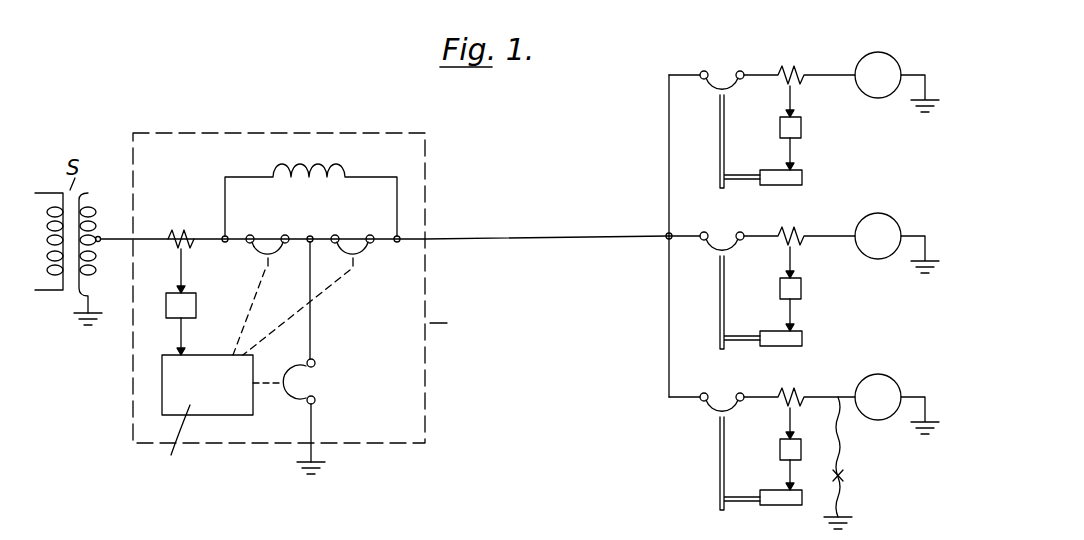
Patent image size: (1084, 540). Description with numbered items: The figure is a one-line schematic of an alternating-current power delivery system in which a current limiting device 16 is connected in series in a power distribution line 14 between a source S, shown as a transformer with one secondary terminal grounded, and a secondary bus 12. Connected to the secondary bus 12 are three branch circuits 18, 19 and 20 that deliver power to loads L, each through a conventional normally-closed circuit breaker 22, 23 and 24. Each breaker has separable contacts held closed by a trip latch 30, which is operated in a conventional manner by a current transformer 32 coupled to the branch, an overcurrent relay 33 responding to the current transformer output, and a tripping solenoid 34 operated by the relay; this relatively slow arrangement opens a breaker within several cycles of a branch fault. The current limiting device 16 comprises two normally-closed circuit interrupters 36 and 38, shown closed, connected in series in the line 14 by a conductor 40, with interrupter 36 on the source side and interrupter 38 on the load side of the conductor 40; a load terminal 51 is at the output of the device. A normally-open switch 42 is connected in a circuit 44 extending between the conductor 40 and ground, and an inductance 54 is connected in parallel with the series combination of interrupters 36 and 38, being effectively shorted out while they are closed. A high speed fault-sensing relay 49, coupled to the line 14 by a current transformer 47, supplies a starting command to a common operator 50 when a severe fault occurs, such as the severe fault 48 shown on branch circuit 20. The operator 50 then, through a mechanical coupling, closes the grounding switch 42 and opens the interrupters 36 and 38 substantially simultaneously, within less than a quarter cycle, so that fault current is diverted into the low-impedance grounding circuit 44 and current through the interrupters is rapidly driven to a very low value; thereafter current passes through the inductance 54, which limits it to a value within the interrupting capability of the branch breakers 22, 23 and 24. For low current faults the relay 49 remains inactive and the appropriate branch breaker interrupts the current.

The secondary bus 12 is at (669, 141).
The power distribution line 14 is at (541, 230).
The current limiting device 16 is at (254, 132).
The branch circuit 18 is at (687, 72).
The branch circuit 19 is at (689, 233).
The branch circuit 20 is at (689, 394).
The circuit breaker 22 is at (709, 93).
The circuit breaker 23 is at (712, 257).
The circuit breaker 24 is at (712, 419).
The trip latch 30 is at (733, 172).
The current transformer 32 is at (800, 66).
The overcurrent relay 33 is at (801, 126).
The tripping solenoid 34 is at (802, 177).
The circuit interrupter 36 is at (268, 238).
The circuit interrupter 38 is at (350, 240).
The conductor 40 is at (327, 240).
The normally-open switch 42 is at (303, 383).
The circuit 44 is at (311, 333).
The current transformer 47 is at (170, 230).
The severe fault 48 is at (846, 476).
The high speed fault-sensing relay 49 is at (196, 305).
The common operator 50 is at (162, 389).
The load terminal 51 is at (410, 245).
The inductance 54 is at (345, 165).